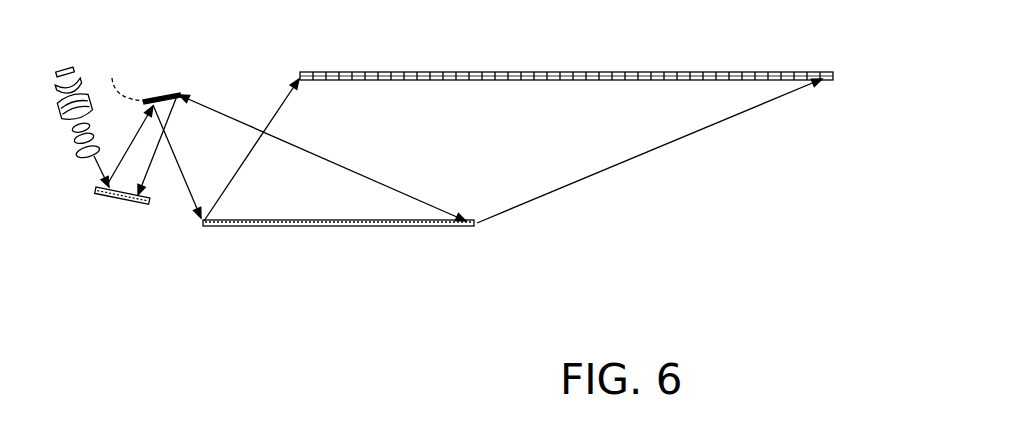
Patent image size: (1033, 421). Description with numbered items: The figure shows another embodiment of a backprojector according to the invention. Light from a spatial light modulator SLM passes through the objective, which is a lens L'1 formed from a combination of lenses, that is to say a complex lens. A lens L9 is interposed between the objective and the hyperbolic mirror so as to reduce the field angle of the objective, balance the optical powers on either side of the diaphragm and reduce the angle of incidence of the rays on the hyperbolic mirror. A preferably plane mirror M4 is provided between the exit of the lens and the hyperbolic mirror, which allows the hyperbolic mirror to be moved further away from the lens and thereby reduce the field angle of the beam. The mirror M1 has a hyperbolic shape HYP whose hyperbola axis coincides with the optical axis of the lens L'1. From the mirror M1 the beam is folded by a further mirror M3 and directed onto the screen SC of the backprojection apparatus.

The spatial light modulator SLM is at (73, 70).
The lens L'1 is at (60, 117).
The lens L9 is at (82, 158).
The hyperbolic shape HYP is at (128, 82).
The mirror M1 is at (166, 87).
The plane mirror M4 is at (122, 207).
The third mirror M3 is at (338, 237).
The screen SC is at (566, 64).